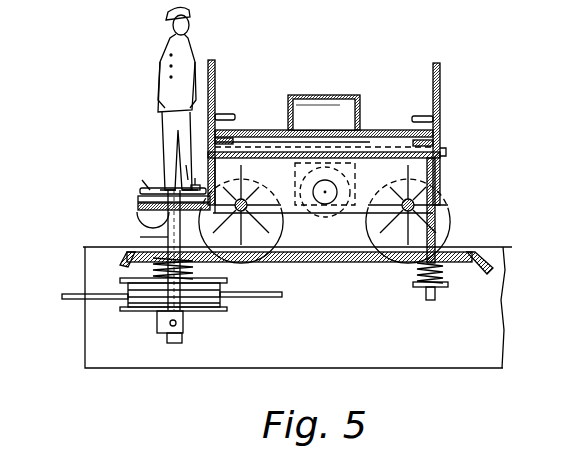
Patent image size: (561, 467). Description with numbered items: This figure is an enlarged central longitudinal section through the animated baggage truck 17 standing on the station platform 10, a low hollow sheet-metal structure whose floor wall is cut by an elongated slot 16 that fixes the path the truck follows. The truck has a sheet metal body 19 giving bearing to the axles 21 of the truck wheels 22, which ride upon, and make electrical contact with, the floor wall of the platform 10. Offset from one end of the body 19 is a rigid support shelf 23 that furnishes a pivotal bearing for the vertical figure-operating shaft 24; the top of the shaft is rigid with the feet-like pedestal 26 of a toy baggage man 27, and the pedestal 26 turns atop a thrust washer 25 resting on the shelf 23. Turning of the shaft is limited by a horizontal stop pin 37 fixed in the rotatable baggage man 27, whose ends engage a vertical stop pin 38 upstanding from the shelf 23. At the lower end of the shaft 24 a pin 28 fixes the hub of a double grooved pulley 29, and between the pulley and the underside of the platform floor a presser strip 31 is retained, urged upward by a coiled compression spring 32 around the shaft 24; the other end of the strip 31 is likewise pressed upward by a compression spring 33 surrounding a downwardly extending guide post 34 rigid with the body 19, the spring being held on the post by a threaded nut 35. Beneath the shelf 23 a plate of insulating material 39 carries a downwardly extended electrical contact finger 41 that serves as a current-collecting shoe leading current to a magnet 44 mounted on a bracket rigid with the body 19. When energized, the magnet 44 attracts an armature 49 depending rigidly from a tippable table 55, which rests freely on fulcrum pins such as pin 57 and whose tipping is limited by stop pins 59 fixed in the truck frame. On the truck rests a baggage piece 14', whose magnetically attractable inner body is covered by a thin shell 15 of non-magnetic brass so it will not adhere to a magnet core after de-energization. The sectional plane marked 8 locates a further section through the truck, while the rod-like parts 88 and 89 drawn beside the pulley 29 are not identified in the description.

The platform 10 is at (500, 282).
The elongated slot 16 is at (88, 247).
The section line 8- 8 is at (72, 205).
The presser strip 31 is at (356, 262).
The animated baggage truck 17 is at (445, 175).
The tippable table 55 is at (264, 131).
The sheet metal body 19 is at (438, 148).
The armature 49 is at (353, 142).
The fulcrum pin 57 is at (230, 136).
The stop pin 59 is at (222, 113).
The thin shell 15 is at (341, 95).
The baggage piece 14' is at (318, 114).
The truck wheels 22 is at (448, 195).
The axles 21 is at (241, 198).
The magnet 44 is at (330, 212).
The guide post 34 is at (440, 250).
The compression spring 33 is at (445, 277).
The nut 35 is at (416, 290).
The toy figure 27 is at (157, 66).
The feet-like pedestal 26 is at (160, 190).
The horizontal stop pin 37 is at (150, 190).
The vertical stop pin 38 is at (196, 183).
The thrust washer 25 is at (160, 192).
The support shelf 23 is at (150, 203).
The plate of insulating material 39 is at (140, 208).
The electrical contact finger 41 is at (137, 220).
The vertical figure-operating shaft 24 is at (137, 237).
The coiled compression spring 32 is at (197, 268).
The double grooved pulley 29 is at (226, 297).
The shaft 88 is at (72, 300).
The rod 89 is at (295, 285).
The pin 28 is at (186, 328).